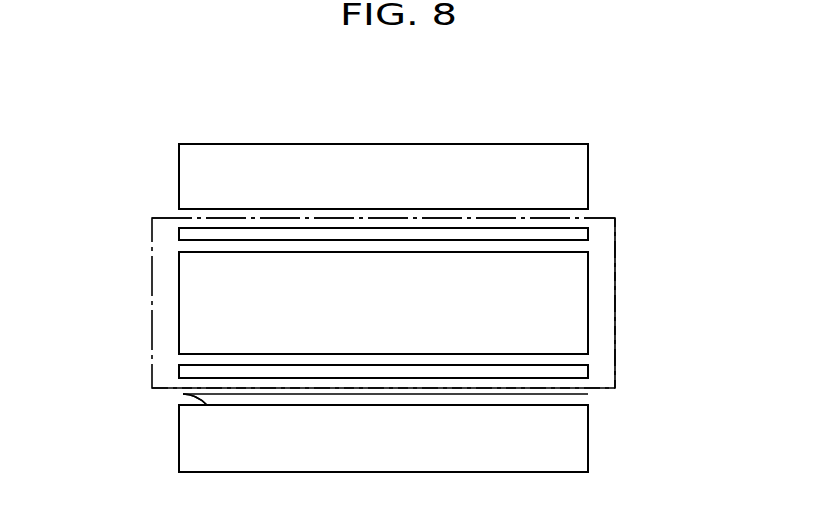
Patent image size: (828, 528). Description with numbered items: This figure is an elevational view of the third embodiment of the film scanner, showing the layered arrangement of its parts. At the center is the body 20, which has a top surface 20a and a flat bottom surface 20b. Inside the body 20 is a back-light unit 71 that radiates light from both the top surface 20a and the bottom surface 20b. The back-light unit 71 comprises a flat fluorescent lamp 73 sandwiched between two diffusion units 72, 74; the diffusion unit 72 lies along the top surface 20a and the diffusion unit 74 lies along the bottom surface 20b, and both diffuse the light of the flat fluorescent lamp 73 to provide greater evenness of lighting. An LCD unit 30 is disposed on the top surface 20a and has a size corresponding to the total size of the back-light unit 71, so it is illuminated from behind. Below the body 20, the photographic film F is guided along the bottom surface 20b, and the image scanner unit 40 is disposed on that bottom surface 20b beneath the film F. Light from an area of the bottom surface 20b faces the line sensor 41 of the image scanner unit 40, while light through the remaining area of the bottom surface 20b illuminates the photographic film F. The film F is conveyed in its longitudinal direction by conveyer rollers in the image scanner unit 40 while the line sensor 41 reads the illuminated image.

The LCD unit 30 is at (588, 165).
The body 20 is at (615, 350).
The top surface 20a is at (613, 218).
The bottom surface 20b is at (152, 389).
The back-light unit 71 is at (615, 293).
The diffusion unit 72 is at (588, 238).
The flat fluorescent lamp 73 is at (200, 303).
The diffusion unit 74 is at (588, 376).
The photographic film F is at (588, 398).
The line sensor 41 is at (180, 394).
The image scanner unit 40 is at (588, 450).